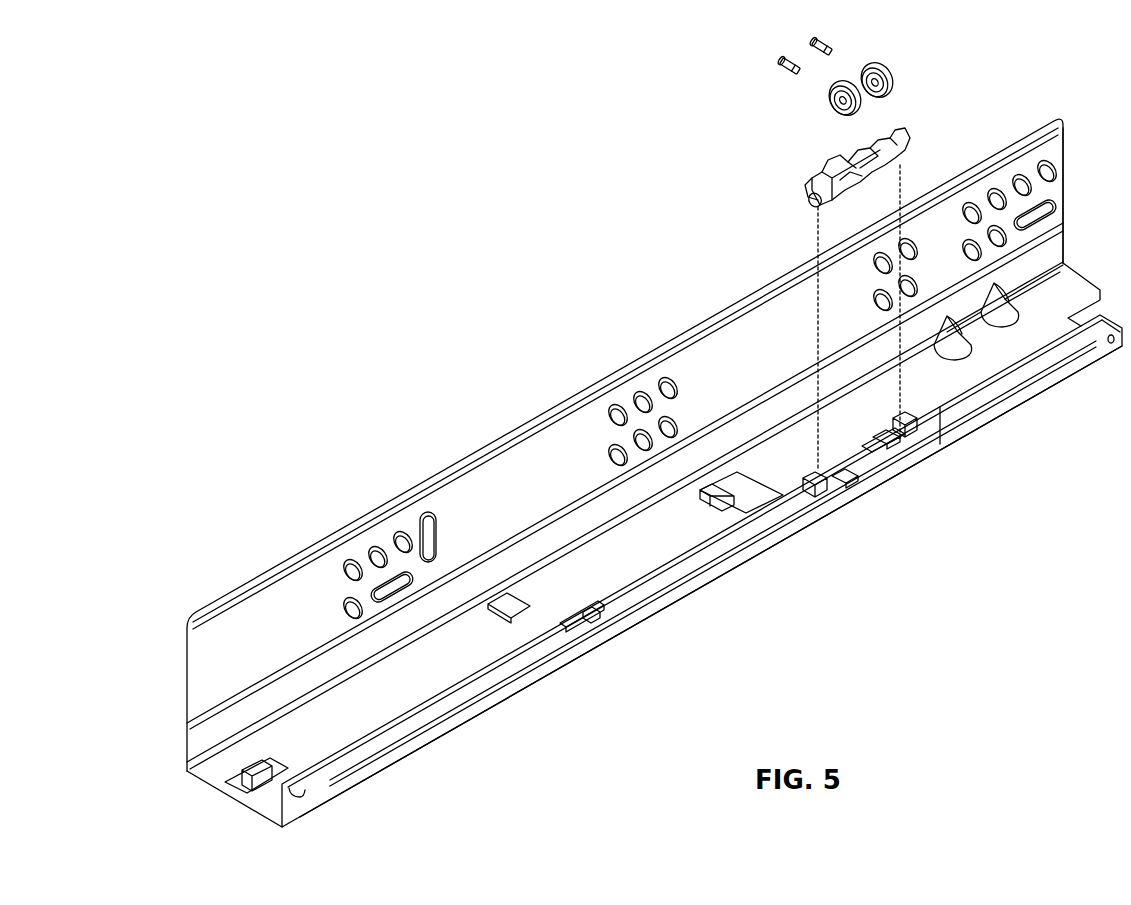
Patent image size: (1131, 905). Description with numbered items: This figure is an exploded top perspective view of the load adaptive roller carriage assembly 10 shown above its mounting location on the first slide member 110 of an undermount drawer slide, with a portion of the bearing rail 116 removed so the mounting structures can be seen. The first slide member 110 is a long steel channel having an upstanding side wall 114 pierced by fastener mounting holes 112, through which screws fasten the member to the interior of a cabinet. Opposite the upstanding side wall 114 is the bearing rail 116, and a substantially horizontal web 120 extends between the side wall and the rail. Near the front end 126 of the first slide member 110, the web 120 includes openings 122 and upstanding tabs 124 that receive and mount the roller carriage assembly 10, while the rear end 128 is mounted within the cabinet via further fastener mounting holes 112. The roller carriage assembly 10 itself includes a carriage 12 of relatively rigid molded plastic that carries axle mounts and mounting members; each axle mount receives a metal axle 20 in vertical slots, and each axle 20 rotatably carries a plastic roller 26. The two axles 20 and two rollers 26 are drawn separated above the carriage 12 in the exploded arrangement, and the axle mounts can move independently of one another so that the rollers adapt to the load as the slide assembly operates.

The load adaptive roller carriage assembly 10 is at (660, 100).
The carriage 12 is at (823, 168).
The axle 20 is at (790, 58).
The roller 26 is at (831, 98).
The first slide member 110 is at (718, 574).
The fastener mounting holes 112 is at (378, 547).
The upstanding side wall 114 is at (512, 476).
The bearing rail 116 is at (678, 571).
The web 120 is at (470, 653).
The openings 122 is at (836, 476).
The upstanding tabs 124 is at (812, 488).
The front end 126 is at (1068, 173).
The rear end 128 is at (258, 798).